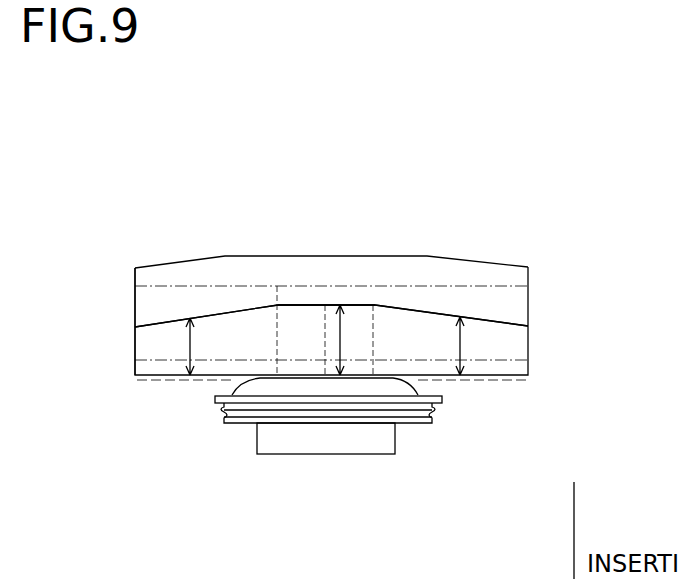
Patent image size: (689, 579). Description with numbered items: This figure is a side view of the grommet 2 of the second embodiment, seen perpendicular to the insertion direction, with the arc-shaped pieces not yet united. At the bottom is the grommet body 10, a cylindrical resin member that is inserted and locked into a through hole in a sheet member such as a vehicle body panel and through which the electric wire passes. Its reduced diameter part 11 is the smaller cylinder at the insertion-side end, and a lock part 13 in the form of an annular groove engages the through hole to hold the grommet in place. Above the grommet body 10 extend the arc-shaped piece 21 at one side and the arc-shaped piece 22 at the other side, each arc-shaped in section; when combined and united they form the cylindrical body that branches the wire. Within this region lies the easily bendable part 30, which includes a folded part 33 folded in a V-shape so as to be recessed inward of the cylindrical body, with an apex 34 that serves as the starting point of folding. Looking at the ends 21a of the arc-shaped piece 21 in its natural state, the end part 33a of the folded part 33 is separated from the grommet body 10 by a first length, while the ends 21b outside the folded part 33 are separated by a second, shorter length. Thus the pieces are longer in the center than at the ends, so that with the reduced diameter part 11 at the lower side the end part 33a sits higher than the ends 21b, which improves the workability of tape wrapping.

The connector 2 is at (478, 173).
The grommet body 10 is at (342, 473).
The reduced diameter part 11 is at (377, 443).
The lock part 13 is at (443, 407).
The arc-shaped piece at one side 21 is at (168, 358).
The ends of the arc-shaped piece 21a is at (331, 316).
The ends outside the folded part 21b is at (163, 322).
The arc-shaped piece at the other side 22 is at (255, 256).
The easily bendable part 30 is at (387, 362).
The folded part 33 is at (352, 318).
The end part of the folded part 33a is at (308, 304).
The apex 34 is at (325, 338).